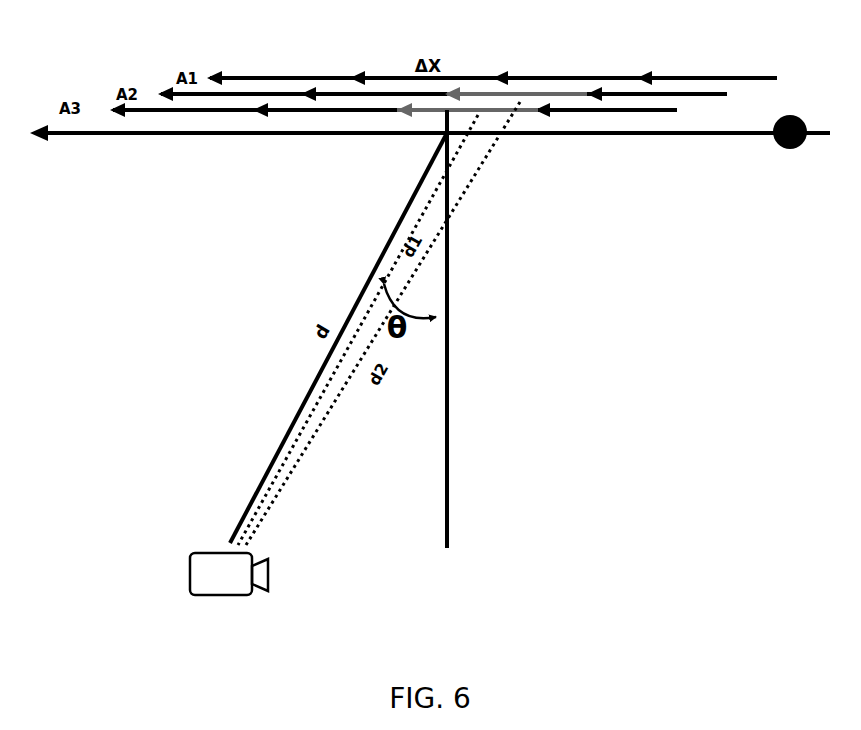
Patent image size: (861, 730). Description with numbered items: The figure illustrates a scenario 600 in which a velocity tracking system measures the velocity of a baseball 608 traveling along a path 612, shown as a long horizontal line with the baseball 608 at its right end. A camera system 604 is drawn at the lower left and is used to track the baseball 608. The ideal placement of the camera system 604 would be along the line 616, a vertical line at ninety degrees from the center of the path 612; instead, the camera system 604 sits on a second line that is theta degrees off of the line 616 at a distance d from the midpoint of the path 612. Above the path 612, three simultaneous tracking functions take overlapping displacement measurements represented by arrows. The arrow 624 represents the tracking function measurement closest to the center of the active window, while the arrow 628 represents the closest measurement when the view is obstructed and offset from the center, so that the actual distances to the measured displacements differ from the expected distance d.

The scenario 600 is at (754, 424).
The camera system 604 is at (222, 594).
The baseball 608 is at (785, 150).
The path 612 is at (222, 137).
The line 616 is at (452, 535).
The arrow 624 is at (492, 115).
The arrow 628 is at (535, 92).